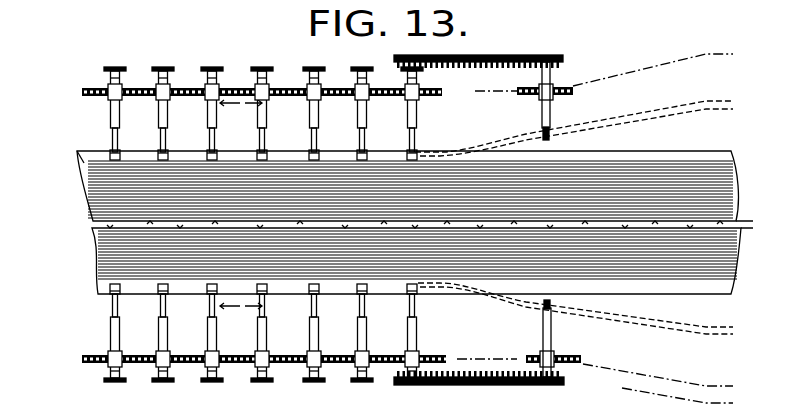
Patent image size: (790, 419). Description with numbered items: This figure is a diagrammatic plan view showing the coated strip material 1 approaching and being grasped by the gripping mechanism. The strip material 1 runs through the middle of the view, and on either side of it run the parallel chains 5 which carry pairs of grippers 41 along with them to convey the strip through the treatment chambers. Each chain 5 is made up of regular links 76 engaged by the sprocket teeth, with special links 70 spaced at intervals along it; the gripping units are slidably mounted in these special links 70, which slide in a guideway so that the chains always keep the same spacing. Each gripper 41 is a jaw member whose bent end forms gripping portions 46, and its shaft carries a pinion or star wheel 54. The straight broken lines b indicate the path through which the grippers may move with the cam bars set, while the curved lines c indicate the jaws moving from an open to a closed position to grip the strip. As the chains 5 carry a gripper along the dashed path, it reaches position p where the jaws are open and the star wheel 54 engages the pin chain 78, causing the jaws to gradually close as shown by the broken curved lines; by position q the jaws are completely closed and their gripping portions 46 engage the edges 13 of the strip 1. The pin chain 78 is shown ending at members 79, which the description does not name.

The strip material 1 is at (92, 202).
The chains 5 is at (80, 93).
The edges 13 is at (297, 151).
The grippers 41 is at (112, 149).
The gripping portions 46 is at (262, 150).
The star wheel 54 is at (158, 68).
The special links 70 is at (110, 98).
The regular links 76 is at (100, 88).
The pin chains 78 is at (535, 56).
The rack end posts 79 is at (407, 58).
The straight broken lines b is at (648, 85).
The curved lines c is at (460, 149).
The position p is at (551, 136).
The position q is at (410, 152).